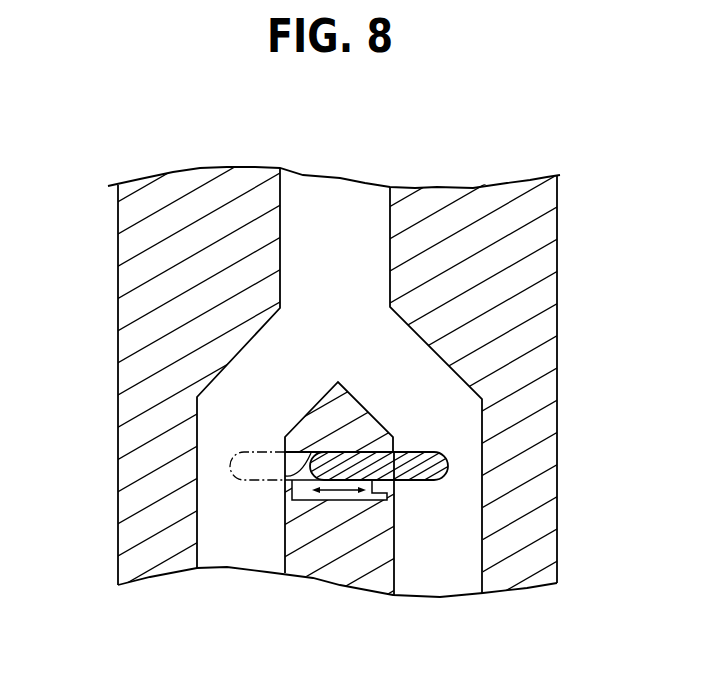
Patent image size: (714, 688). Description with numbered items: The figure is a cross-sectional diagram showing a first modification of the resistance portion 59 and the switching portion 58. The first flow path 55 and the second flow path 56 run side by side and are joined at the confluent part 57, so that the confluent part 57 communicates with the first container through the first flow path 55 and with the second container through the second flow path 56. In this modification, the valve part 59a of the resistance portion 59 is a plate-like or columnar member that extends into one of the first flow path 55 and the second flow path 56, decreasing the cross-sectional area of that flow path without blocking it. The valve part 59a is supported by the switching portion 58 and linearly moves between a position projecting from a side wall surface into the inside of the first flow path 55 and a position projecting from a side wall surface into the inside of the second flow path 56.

The first flow path 55 is at (197, 552).
The second flow path 56 is at (482, 568).
The confluent part 57 is at (282, 199).
The switching portion 58 is at (283, 476).
The resistance portion 59 is at (405, 428).
The valve part 59a is at (448, 458).